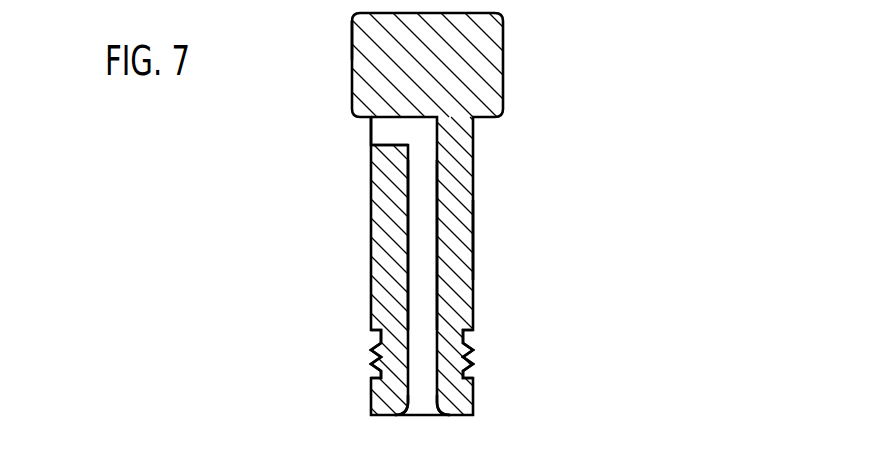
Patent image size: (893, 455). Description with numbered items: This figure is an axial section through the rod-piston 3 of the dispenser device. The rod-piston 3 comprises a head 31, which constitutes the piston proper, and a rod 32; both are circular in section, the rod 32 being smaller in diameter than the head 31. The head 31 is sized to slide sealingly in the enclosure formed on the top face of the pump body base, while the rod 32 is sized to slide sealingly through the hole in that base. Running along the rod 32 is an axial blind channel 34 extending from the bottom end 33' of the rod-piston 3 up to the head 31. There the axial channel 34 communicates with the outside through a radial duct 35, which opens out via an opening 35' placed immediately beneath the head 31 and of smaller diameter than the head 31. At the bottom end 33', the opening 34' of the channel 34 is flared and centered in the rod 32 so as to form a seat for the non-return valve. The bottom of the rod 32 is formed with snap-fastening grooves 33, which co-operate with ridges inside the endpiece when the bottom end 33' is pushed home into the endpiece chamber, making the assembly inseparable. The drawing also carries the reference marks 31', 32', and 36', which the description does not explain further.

The rod-piston 3 is at (514, 96).
The head 31 is at (451, 214).
The head side surface 31' is at (323, 36).
The rod 32 is at (478, 266).
The shank outer surface 32' is at (500, 240).
The snap-fastening grooves 33 is at (492, 354).
The bottom end of the rod-piston 33' is at (351, 354).
The axial blind channel 34 is at (377, 245).
The opening at the bottom end 34' is at (438, 425).
The radial duct 35 is at (362, 280).
The opening 35' is at (362, 134).
The rounded inner corner 36' is at (402, 425).